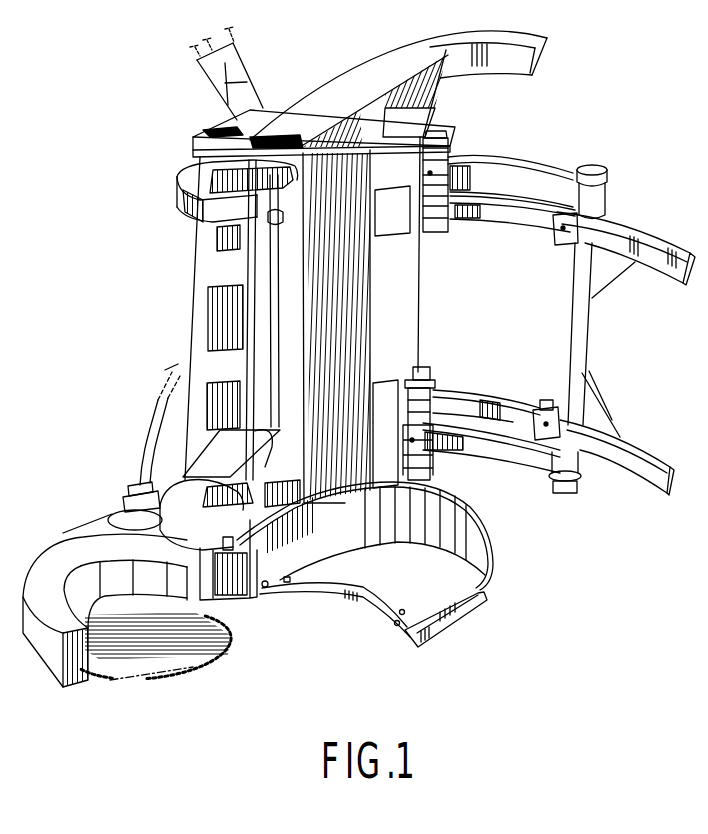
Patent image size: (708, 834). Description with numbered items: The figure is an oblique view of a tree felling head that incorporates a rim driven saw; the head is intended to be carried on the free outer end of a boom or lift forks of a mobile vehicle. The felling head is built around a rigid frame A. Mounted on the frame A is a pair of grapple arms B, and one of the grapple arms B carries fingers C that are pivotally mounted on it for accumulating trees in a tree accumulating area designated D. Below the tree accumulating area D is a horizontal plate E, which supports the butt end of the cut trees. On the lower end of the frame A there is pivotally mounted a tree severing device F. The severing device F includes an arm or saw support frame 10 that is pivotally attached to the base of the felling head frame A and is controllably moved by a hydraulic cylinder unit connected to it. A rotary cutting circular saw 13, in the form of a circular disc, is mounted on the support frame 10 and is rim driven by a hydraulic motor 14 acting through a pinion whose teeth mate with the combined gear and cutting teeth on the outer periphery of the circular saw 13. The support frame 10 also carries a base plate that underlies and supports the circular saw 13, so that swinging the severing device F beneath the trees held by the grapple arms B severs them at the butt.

The rigid frame A is at (386, 316).
The grapple arms B is at (180, 192).
The fingers C is at (667, 253).
The tree accumulating area D is at (437, 513).
The horizontal plate E is at (430, 576).
The tree severing device F is at (63, 537).
The saw support frame 10 is at (43, 580).
The rotary cutting circular saw 13 is at (217, 655).
The hydraulic motor 14 is at (113, 513).